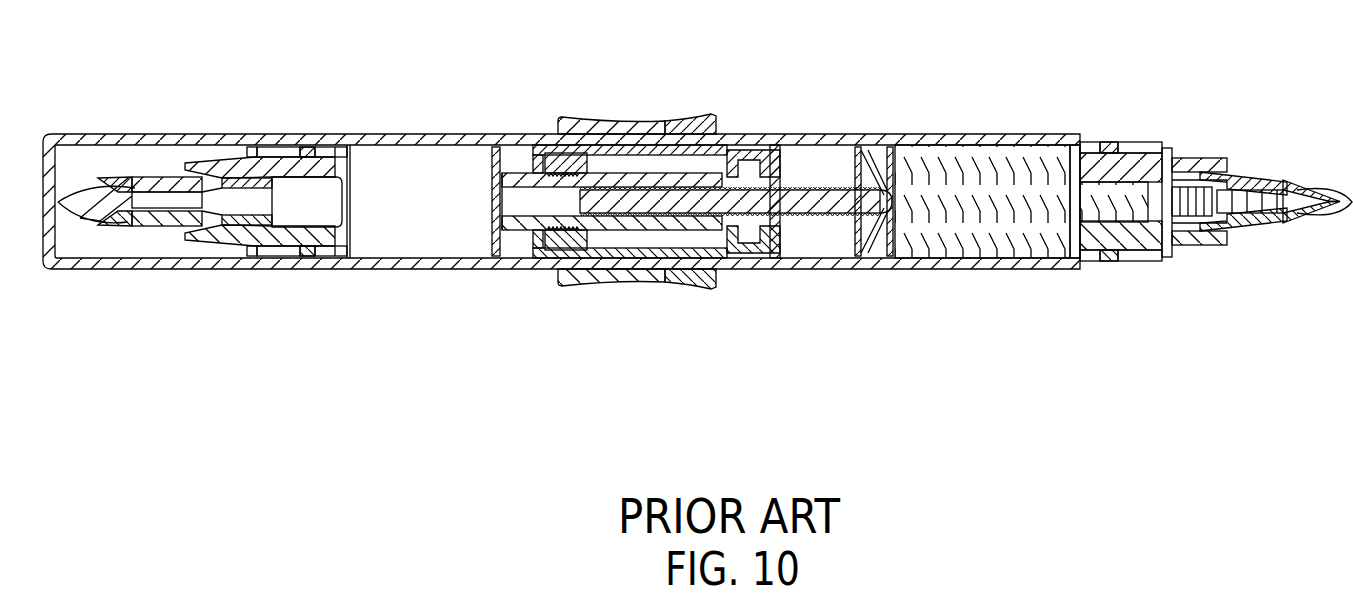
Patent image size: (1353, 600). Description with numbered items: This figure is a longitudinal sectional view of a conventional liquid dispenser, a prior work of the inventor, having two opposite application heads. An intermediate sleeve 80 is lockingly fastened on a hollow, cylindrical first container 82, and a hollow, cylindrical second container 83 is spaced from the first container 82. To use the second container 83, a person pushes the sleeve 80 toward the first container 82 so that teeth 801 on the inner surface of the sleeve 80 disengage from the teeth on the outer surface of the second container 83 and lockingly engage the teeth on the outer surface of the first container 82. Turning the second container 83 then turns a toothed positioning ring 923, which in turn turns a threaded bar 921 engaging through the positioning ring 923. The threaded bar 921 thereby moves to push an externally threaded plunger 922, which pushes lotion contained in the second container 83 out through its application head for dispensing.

The first container 82 is at (423, 128).
The second container 83 is at (925, 128).
The intermediate sleeve 80 is at (588, 283).
The teeth 801 is at (677, 285).
The threaded bar 921 is at (817, 200).
The externally threaded plunger 922 is at (873, 247).
The toothed positioning ring 923 is at (778, 242).